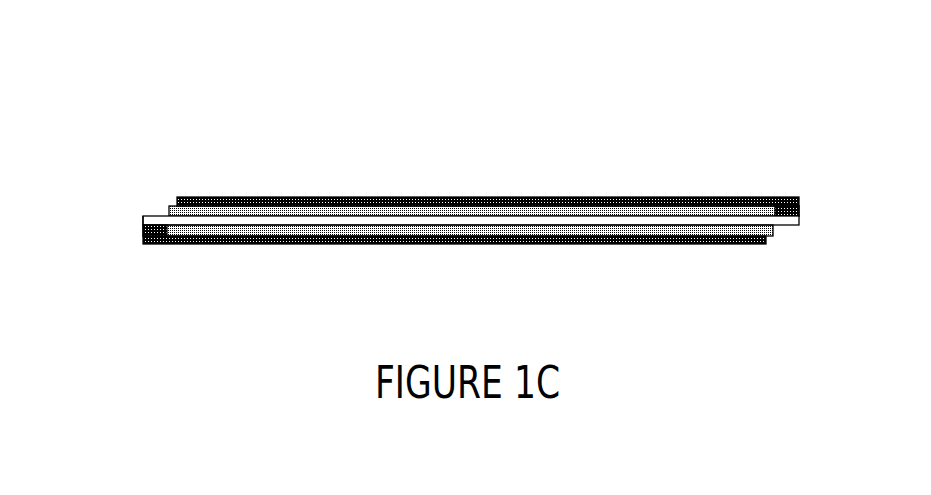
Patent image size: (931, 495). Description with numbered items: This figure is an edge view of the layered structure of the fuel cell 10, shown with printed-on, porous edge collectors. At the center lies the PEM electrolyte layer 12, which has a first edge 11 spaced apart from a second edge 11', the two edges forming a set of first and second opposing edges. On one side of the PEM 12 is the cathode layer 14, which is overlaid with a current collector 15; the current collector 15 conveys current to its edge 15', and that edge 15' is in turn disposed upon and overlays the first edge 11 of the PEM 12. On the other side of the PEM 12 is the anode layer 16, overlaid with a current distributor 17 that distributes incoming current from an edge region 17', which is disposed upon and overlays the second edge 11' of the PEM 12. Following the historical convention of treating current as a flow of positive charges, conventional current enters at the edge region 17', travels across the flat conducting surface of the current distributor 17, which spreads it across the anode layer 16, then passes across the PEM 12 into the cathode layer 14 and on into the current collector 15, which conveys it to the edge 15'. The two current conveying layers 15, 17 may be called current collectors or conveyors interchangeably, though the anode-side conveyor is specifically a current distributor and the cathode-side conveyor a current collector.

The fuel cell 10 is at (488, 212).
The first edge 11 is at (513, 252).
The second edge 11' is at (118, 164).
The PEM electrolyte layer 12 is at (513, 277).
The cathode layer 14 is at (635, 198).
The current collector 15 is at (484, 165).
The edge of current collector 15' is at (812, 146).
The anode layer 16 is at (423, 233).
The current distributor 17 is at (454, 303).
The edge region of current distributor 17' is at (137, 288).